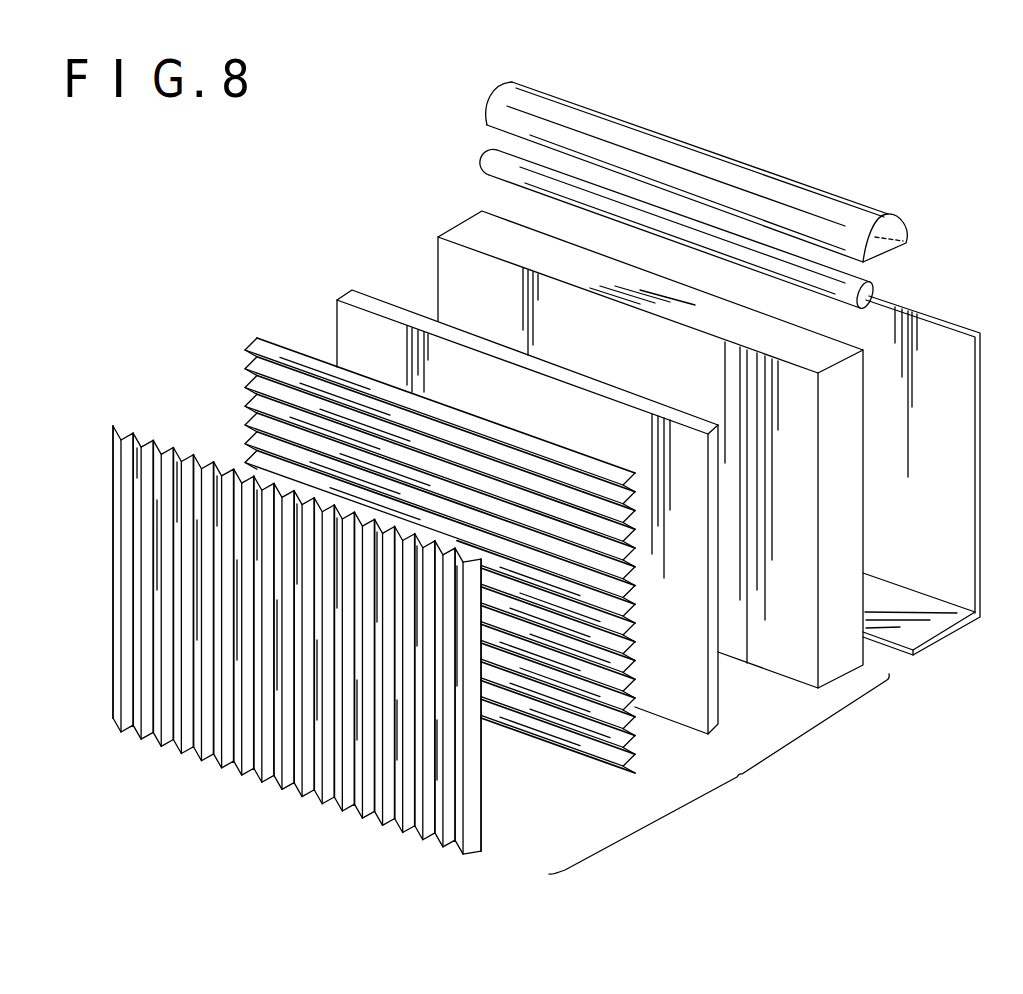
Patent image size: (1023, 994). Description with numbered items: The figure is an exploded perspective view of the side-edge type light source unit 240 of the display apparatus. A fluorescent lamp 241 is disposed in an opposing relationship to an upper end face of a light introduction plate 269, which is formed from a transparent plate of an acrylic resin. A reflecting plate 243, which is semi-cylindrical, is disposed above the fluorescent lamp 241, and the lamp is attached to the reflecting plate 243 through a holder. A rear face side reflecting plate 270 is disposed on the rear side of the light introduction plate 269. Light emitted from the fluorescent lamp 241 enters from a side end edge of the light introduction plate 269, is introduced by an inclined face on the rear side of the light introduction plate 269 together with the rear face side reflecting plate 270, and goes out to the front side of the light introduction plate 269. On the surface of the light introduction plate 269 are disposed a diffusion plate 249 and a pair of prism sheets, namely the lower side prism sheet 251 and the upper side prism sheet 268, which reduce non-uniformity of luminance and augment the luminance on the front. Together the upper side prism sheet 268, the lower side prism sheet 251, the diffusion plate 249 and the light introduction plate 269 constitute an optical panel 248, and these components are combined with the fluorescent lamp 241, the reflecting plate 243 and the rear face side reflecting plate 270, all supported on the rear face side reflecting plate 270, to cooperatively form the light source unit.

The side-edge type light source unit 240 is at (204, 344).
The fluorescent lamp 241 is at (485, 172).
The reflecting plate 243 is at (797, 182).
The optical panel 248 is at (745, 781).
The diffusion plate 249 is at (695, 689).
The lower side prism sheet 251 is at (582, 752).
The upper side prism sheet 268 is at (238, 762).
The light introduction plate 269 is at (845, 525).
The rear face side reflecting plate 270 is at (945, 345).